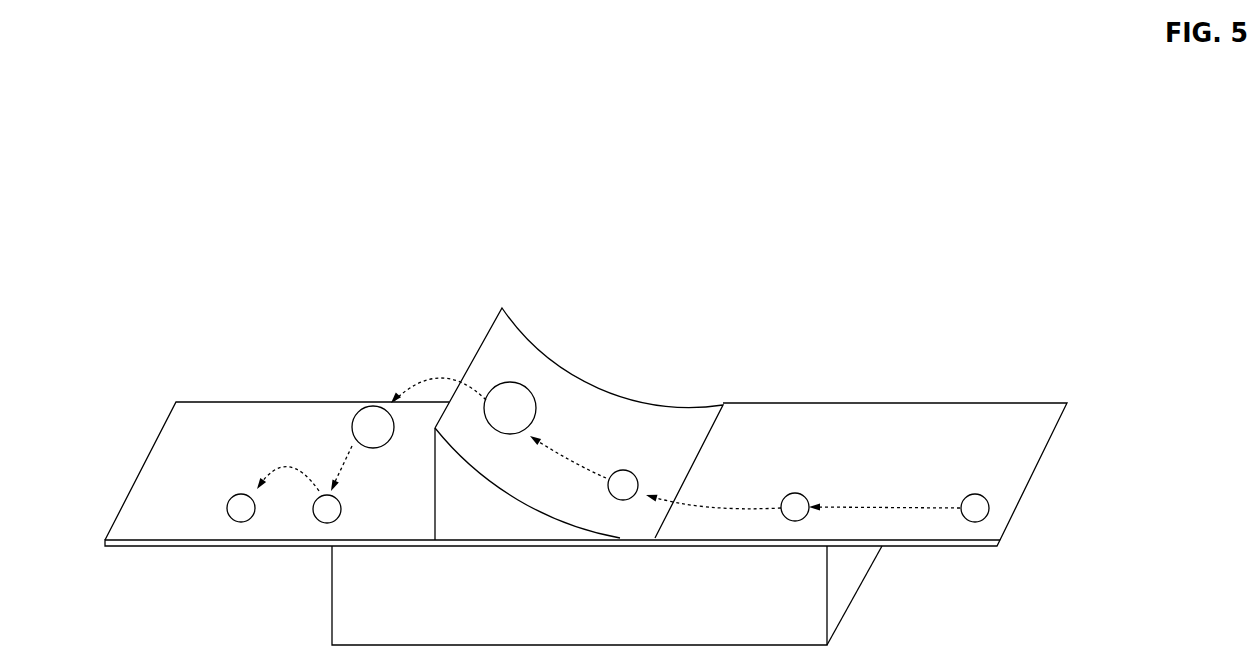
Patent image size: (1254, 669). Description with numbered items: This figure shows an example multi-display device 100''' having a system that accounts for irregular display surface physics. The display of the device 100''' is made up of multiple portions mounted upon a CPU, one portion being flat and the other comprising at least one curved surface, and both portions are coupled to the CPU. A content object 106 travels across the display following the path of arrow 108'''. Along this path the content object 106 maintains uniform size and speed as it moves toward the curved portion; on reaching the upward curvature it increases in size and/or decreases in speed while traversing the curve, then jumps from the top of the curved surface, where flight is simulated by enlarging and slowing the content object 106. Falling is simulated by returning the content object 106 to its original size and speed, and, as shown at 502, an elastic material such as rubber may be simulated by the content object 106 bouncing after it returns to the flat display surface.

The device 100''' is at (566, 442).
The bouncing 502 is at (268, 479).
The arrow 108''' is at (598, 422).
The content object 106 is at (989, 504).